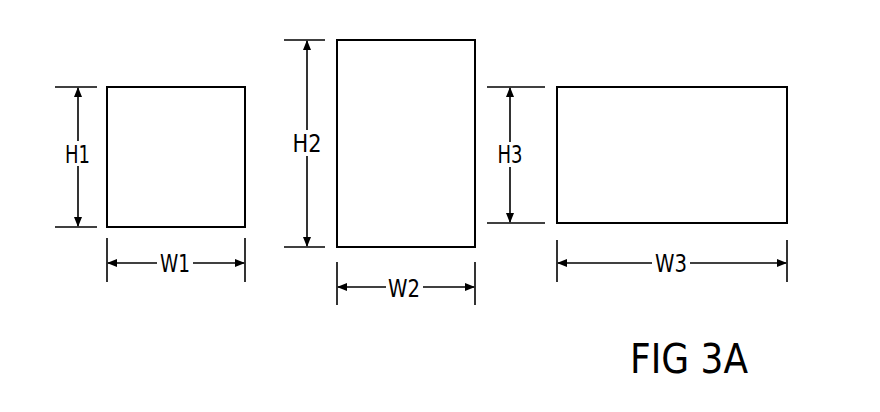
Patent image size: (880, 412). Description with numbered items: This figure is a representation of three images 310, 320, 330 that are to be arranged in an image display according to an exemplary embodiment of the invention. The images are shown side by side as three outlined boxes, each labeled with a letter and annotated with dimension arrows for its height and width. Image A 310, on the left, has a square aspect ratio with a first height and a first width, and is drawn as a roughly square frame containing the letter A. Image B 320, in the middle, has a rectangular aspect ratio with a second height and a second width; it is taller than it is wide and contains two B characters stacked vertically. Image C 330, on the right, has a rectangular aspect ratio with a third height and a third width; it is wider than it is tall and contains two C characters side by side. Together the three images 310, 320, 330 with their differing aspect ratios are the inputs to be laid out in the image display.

The image A 310 is at (130, 87).
The image B 320 is at (475, 72).
The image C 330 is at (672, 87).